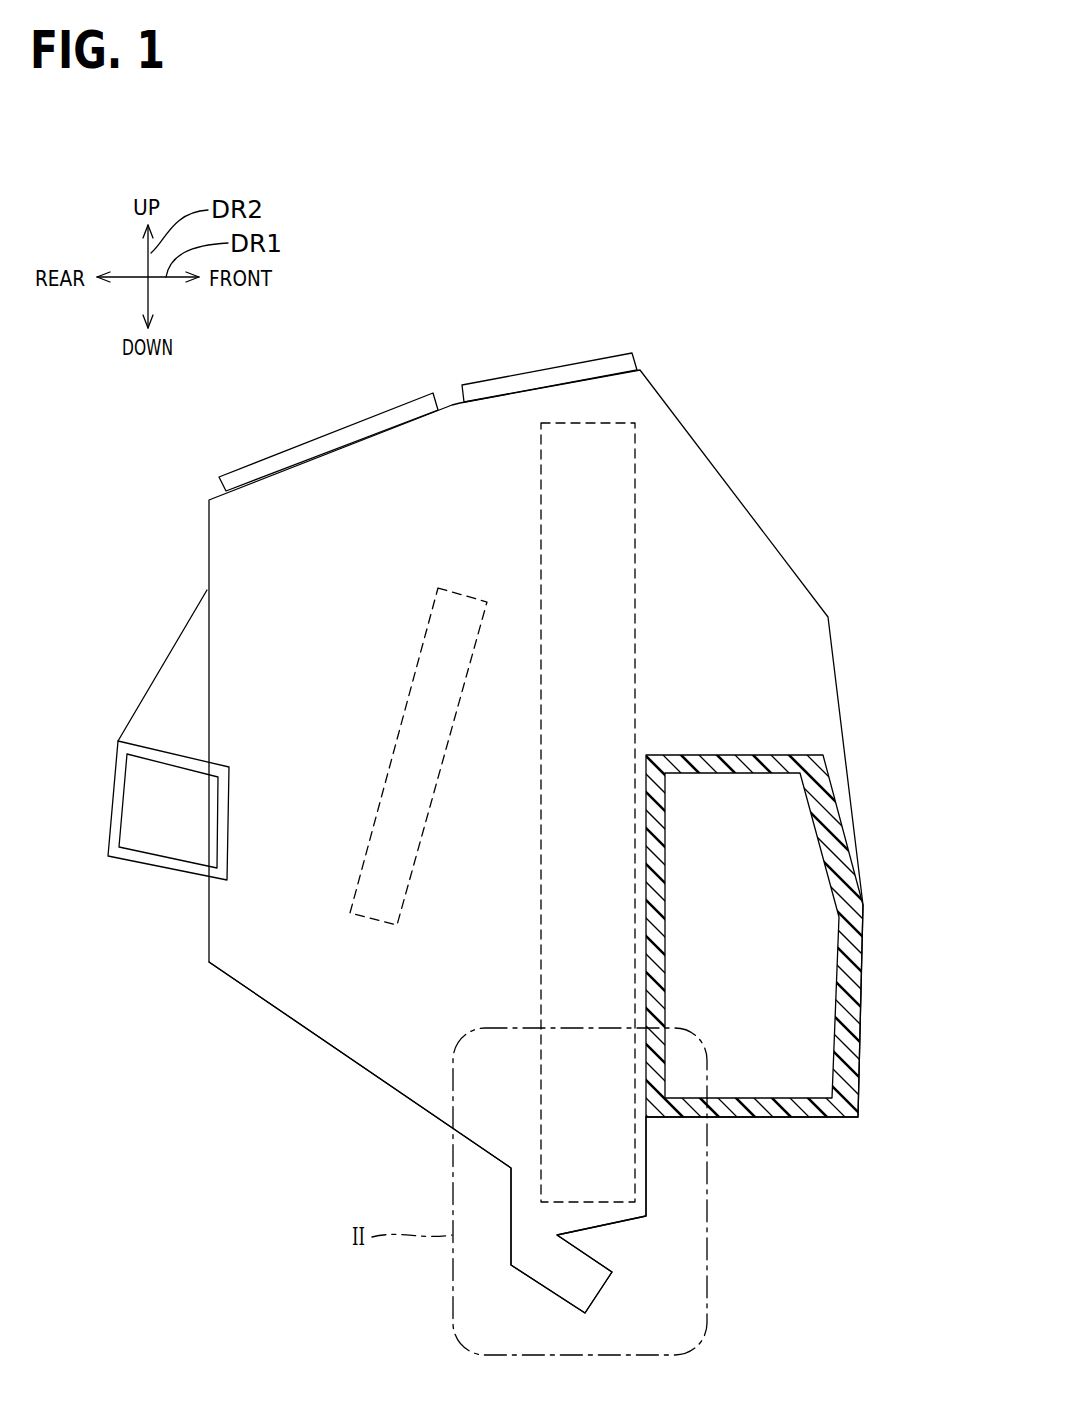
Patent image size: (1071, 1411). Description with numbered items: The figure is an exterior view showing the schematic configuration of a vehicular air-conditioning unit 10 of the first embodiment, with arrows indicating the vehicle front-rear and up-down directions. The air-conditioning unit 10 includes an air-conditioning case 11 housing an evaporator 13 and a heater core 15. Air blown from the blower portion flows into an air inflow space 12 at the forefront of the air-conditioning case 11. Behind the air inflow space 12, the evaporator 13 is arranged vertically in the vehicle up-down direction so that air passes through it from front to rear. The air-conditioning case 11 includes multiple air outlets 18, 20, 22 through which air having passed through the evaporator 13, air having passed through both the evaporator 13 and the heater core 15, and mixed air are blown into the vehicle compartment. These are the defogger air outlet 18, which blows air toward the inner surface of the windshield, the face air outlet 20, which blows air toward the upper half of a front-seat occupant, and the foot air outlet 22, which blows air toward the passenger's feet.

The vehicular air-conditioning unit 10 is at (822, 277).
The air-conditioning case 11 is at (242, 987).
The air inflow space 12 is at (809, 990).
The evaporator 13 is at (620, 482).
The heater core 15 is at (350, 913).
The defogger air outlet 18 is at (582, 360).
The face air outlet 20 is at (358, 420).
The foot air outlet 22 is at (143, 835).